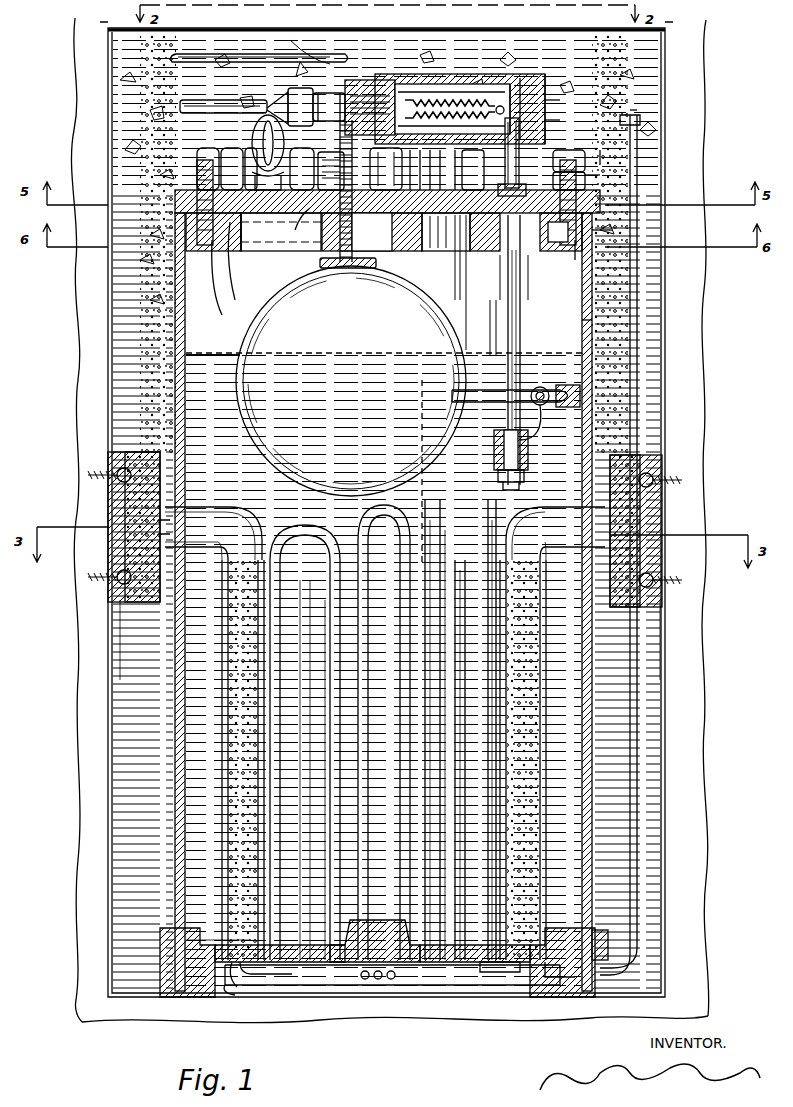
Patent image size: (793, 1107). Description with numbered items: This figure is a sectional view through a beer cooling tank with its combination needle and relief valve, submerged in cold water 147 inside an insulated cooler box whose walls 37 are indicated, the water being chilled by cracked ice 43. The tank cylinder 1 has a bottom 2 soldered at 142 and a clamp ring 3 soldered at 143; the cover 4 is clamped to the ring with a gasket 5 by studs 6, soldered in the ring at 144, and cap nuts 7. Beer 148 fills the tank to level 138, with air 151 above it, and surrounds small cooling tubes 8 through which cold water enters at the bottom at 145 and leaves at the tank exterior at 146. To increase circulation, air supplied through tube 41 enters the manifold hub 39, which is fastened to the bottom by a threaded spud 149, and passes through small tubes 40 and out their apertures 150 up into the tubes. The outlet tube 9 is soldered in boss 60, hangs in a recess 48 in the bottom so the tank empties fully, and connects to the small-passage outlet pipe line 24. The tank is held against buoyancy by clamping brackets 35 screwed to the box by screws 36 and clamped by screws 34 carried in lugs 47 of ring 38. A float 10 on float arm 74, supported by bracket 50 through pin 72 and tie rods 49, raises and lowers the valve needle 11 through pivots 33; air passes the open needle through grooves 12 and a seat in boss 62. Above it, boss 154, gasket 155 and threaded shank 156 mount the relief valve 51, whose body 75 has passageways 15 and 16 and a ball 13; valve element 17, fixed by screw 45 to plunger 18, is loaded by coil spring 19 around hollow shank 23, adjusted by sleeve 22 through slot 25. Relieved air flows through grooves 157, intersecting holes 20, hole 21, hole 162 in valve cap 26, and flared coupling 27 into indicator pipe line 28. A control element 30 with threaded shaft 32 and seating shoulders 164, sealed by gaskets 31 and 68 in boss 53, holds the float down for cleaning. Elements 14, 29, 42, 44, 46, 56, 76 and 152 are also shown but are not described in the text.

The tank cylinder 1 is at (185, 300).
The tank bottom 2 is at (192, 990).
The clamp ring 3 is at (232, 245).
The tank cover 4 is at (275, 245).
The gasket 5 is at (225, 230).
The studs 6 is at (577, 260).
The cap nuts 7 is at (569, 181).
The cooling tubes 8 is at (222, 908).
The outlet tube 9 is at (450, 290).
The float 10 is at (392, 300).
The valve needle 11 is at (522, 325).
The grooves 12 is at (525, 262).
The ball 13 is at (500, 210).
The cylinder 14 is at (473, 170).
The vertical passageway 15 is at (569, 161).
The body passageway 16 is at (510, 149).
The valve element 17 is at (546, 72).
The plunger 18 is at (521, 75).
The coil spring 19 is at (443, 173).
The intersecting holes 20 is at (508, 80).
The shank hole 21 is at (421, 173).
The adjusting and retaining sleeve 22 is at (386, 169).
The hollow shank 23 is at (430, 90).
The outlet pipe line 24 is at (259, 57).
The slot 25 is at (400, 78).
The valve cap 26 is at (330, 93).
The flared coupling 27 is at (290, 107).
The indicator pipe line 28 is at (223, 106).
The hand wheel 29 is at (268, 154).
The control element 30 is at (335, 262).
The gasket 31 is at (331, 171).
The threaded shaft 32 is at (372, 232).
The pivots 33 is at (548, 385).
The clamping screws 34 is at (140, 545).
The clamping bracket 35 is at (118, 445).
The screws 36 is at (90, 472).
The cooler box walls 37 is at (112, 632).
The ring 38 is at (640, 490).
The manifold hub 39 is at (340, 990).
The small tubes 40 is at (265, 990).
The air tube 41 is at (640, 922).
The center block 42 is at (355, 925).
The cracked ice 43 is at (140, 270).
The gravel 44 is at (115, 300).
The screw 45 is at (556, 98).
The spring housing 46 is at (365, 82).
The lugs 47 is at (655, 560).
The recess 48 is at (460, 975).
The tie rods 49 is at (510, 330).
The bracket 50 is at (523, 459).
The relief valve 51 is at (560, 118).
The boss 53 is at (322, 236).
The wire 56 is at (238, 261).
The boss 60 is at (485, 240).
The boss 62 is at (552, 250).
The gasket 68 is at (361, 260).
The pin 72 is at (575, 392).
The float arm 74 is at (560, 427).
The relief valve body 75 is at (455, 95).
The pin 76 is at (507, 110).
The beer level 138 is at (226, 358).
The solder 142 is at (608, 940).
The solder 143 is at (610, 240).
The solder 144 is at (231, 280).
The water inlet 145 is at (237, 990).
The water outlet 146 is at (170, 560).
The cold water 147 is at (185, 935).
The beer 148 is at (185, 870).
The threaded spud 149 is at (360, 985).
The apertures 150 is at (225, 998).
The air 151 is at (592, 320).
The block 152 is at (560, 995).
The boss 154 is at (600, 175).
The gasket 155 is at (620, 148).
The relief valve threaded shank 156 is at (600, 162).
The grooves 157 is at (445, 232).
The hole 162 is at (290, 42).
The seating shoulder 164 is at (295, 232).